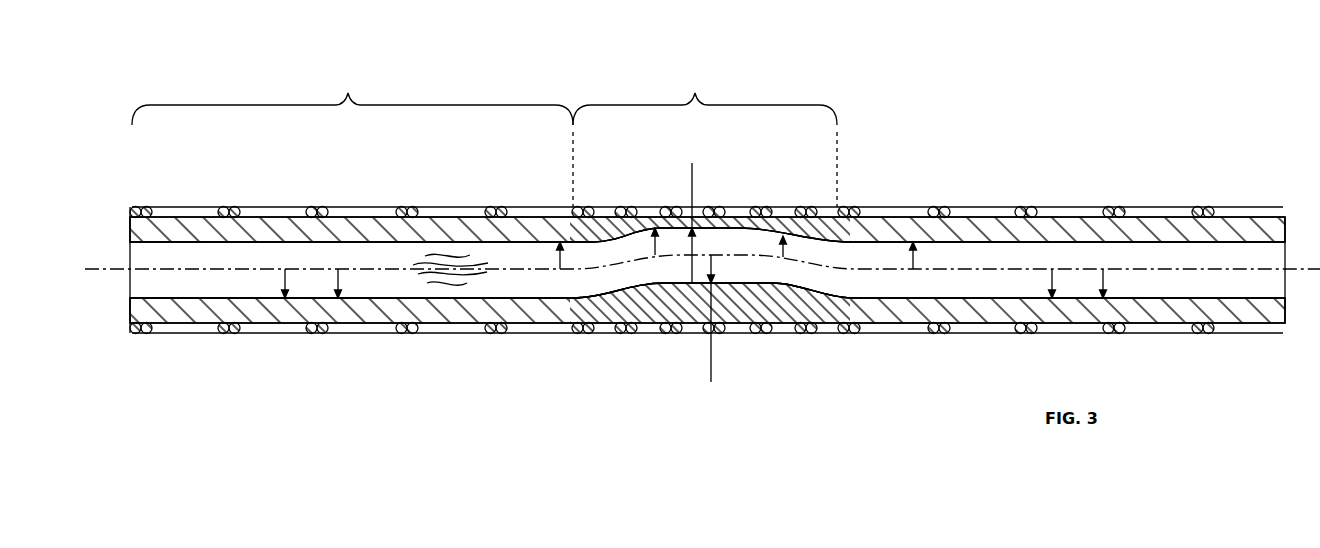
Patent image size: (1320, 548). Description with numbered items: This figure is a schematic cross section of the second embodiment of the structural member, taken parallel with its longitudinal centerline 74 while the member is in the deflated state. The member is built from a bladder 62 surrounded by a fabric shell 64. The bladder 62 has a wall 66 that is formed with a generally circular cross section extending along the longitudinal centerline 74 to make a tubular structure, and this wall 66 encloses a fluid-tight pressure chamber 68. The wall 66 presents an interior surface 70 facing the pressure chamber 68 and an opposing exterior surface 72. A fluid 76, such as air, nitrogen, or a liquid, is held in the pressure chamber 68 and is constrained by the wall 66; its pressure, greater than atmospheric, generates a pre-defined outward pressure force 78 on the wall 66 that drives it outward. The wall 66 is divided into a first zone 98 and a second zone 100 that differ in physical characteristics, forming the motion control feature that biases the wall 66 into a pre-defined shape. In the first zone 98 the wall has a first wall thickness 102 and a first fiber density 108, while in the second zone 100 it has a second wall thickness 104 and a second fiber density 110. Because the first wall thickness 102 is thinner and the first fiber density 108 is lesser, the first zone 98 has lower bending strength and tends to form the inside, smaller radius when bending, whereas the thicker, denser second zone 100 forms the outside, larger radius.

The bladder 62 is at (707, 266).
The fabric shell 64 is at (1087, 207).
The wall 66 is at (197, 233).
The pressure chamber 68 is at (255, 258).
The interior surface 70 is at (155, 298).
The exterior surface 72 is at (142, 333).
The longitudinal centerline 74 is at (103, 272).
The fluid 76 is at (452, 280).
The outward pressure force 78 is at (790, 250).
The first zone 98 is at (352, 138).
The second zone 100 is at (705, 138).
The first wall thickness 102 is at (692, 172).
The second wall thickness 104 is at (711, 360).
The first fiber density 108 is at (357, 310).
The second fiber density 110 is at (588, 403).